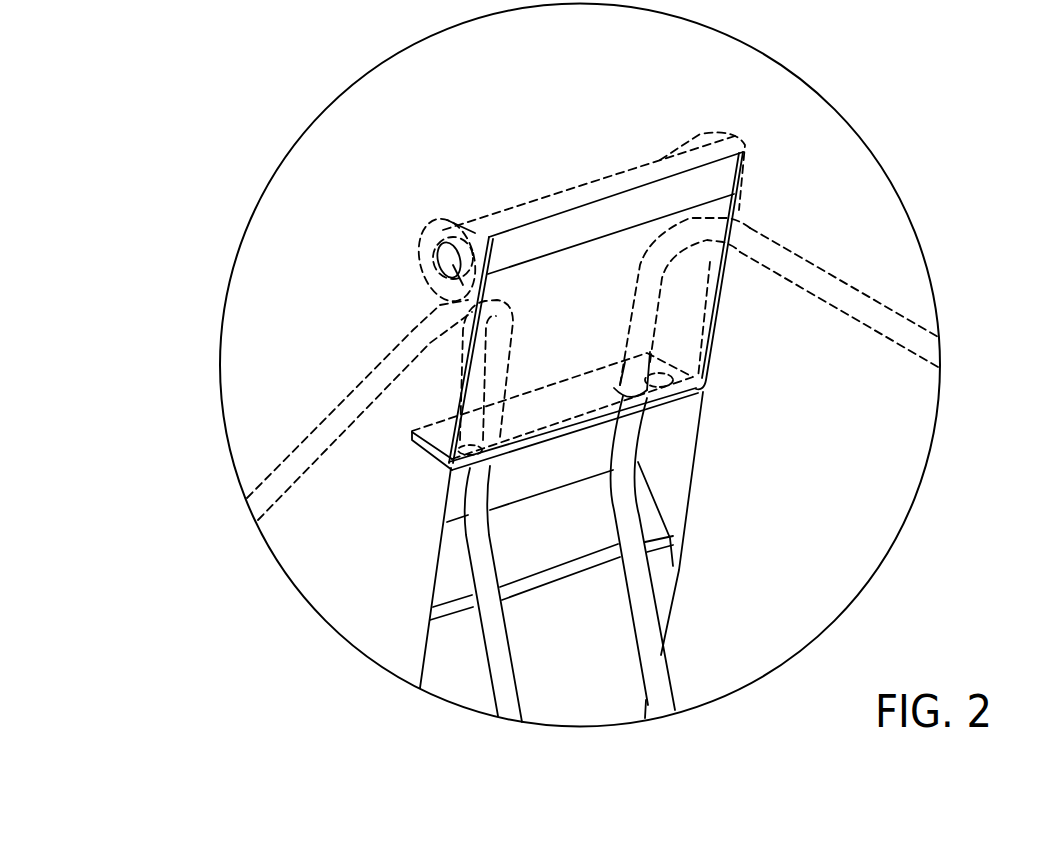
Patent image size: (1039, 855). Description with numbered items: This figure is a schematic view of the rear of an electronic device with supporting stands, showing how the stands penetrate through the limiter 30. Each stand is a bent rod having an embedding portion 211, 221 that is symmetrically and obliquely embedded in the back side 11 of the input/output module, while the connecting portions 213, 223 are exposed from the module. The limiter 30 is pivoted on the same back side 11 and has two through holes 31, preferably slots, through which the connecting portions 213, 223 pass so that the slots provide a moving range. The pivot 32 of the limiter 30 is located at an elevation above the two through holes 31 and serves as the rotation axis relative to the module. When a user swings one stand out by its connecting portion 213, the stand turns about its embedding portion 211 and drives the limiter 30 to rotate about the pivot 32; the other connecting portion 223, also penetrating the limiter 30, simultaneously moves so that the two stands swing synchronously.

The back side 11 is at (846, 160).
The limiter 30 is at (572, 252).
The through holes 31 is at (690, 393).
The pivot 32 is at (432, 252).
The embedding portion 211 is at (907, 320).
The embedding portion 221 is at (298, 443).
The connecting portion 213 is at (670, 679).
The connecting portion 223 is at (493, 683).